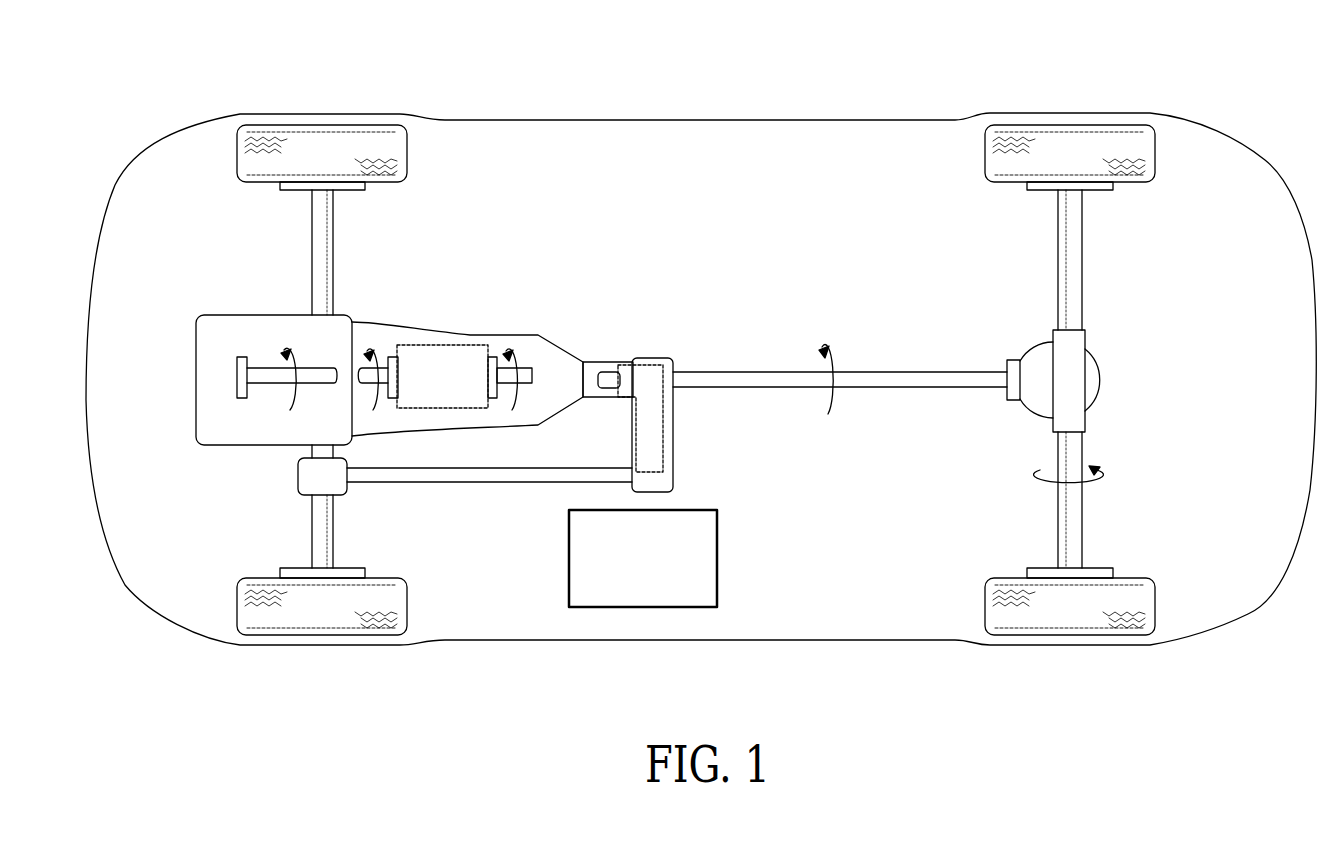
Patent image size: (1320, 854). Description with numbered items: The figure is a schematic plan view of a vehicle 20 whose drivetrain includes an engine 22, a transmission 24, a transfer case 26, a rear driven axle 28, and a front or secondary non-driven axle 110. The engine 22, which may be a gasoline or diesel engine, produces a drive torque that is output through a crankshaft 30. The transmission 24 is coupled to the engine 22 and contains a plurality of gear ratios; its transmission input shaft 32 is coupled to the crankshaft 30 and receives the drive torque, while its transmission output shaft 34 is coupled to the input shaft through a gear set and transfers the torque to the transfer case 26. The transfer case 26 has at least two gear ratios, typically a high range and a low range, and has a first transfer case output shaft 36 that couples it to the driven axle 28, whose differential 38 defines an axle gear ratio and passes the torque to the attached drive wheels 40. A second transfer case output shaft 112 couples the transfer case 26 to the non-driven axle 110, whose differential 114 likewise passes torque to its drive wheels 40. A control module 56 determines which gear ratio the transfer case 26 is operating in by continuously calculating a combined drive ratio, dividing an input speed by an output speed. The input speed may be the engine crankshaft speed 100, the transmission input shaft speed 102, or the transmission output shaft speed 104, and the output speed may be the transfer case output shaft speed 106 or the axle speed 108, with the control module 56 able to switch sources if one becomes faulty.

The vehicle 20 is at (876, 103).
The engine 22 is at (250, 315).
The transmission 24 is at (473, 330).
The transfer case 26 is at (652, 357).
The driven axle 28 is at (1083, 268).
The crankshaft 30 is at (310, 390).
The transmission input shaft 32 is at (362, 390).
The transmission output shaft 34 is at (610, 371).
The first transfer case output shaft 36 is at (917, 388).
The differential 38 is at (1099, 380).
The drive wheel 40 is at (310, 166).
The control module 56 is at (630, 567).
The engine crankshaft speed 100 is at (290, 351).
The transmission input shaft speed 102 is at (376, 346).
The transmission output shaft speed 104 is at (516, 350).
The transfer case output shaft speed 106 is at (830, 348).
The axle speed 108 is at (1088, 482).
The non-driven axle 110 is at (326, 238).
The second transfer case output shaft 112 is at (472, 483).
The differential 114 is at (307, 483).